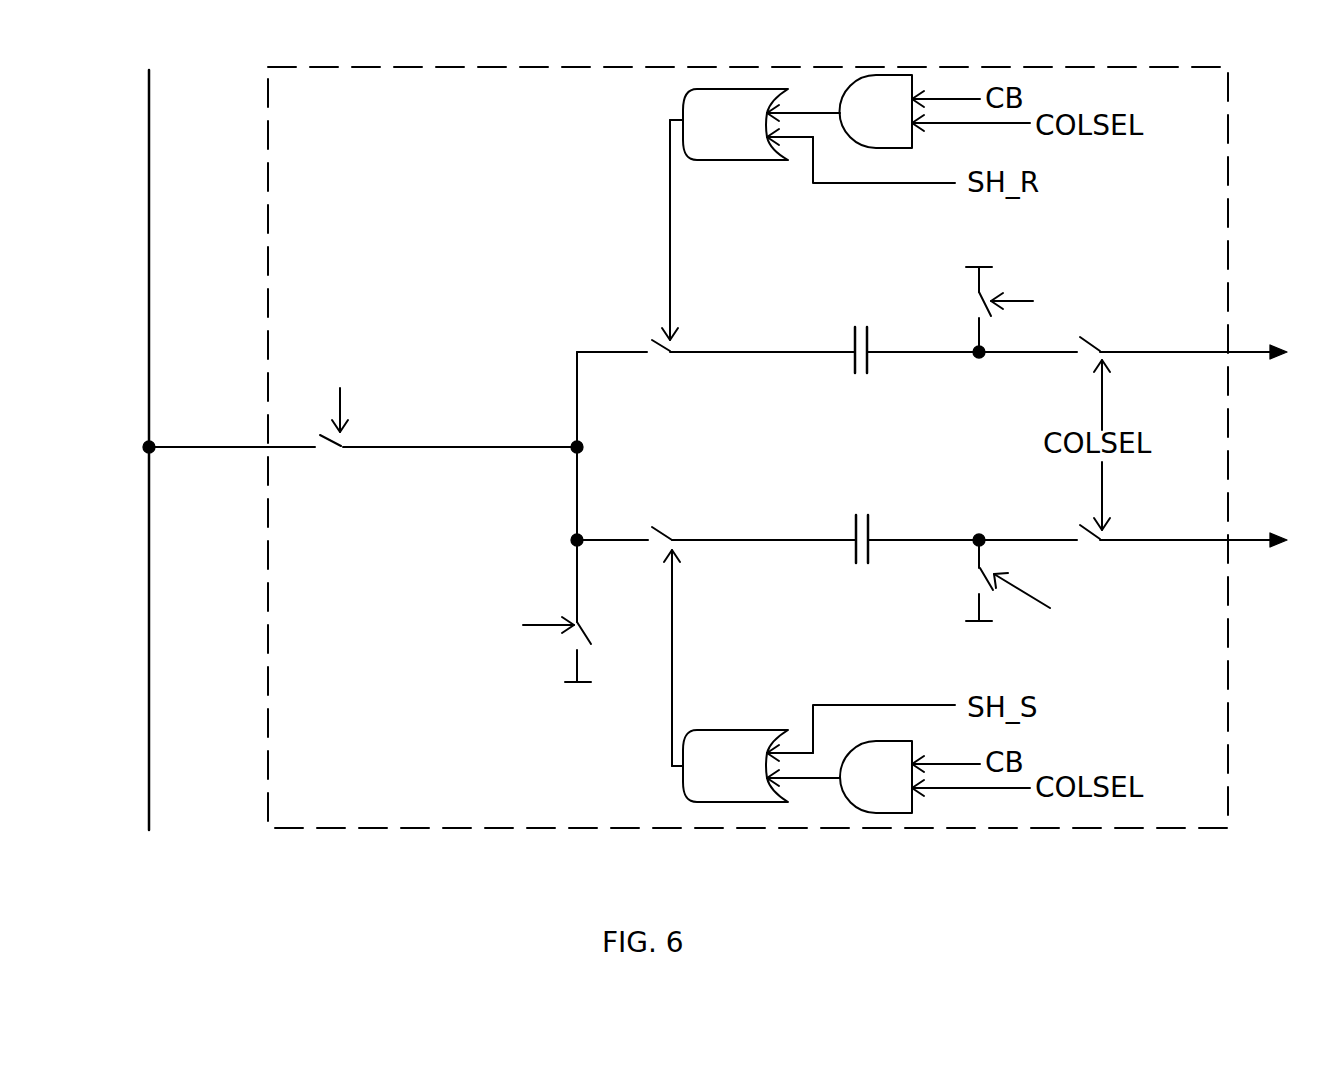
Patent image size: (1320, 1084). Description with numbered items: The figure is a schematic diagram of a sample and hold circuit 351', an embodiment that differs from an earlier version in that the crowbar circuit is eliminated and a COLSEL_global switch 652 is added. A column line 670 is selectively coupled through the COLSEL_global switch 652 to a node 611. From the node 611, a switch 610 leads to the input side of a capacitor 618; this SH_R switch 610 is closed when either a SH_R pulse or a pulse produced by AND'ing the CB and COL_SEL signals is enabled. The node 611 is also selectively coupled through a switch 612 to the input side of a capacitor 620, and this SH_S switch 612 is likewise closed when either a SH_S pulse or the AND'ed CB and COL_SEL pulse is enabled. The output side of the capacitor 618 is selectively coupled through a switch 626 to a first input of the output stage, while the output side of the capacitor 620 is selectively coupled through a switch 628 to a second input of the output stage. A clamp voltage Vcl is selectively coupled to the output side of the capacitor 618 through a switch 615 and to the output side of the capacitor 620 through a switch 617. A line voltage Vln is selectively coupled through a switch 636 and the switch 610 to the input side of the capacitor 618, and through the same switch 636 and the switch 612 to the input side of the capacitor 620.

The sample and hold circuit 351' is at (748, 447).
The column line 670 is at (152, 366).
The COLSEL_global switch 652 is at (327, 452).
The node 611 is at (586, 446).
The SH_R switch 610 is at (657, 356).
The SH_S switch 612 is at (650, 532).
The capacitor 618 is at (861, 325).
The capacitor 620 is at (862, 566).
The switch 615 is at (976, 300).
The switch 617 is at (977, 578).
The switch 626 is at (1083, 355).
The switch 628 is at (1088, 545).
The switch 636 is at (574, 641).